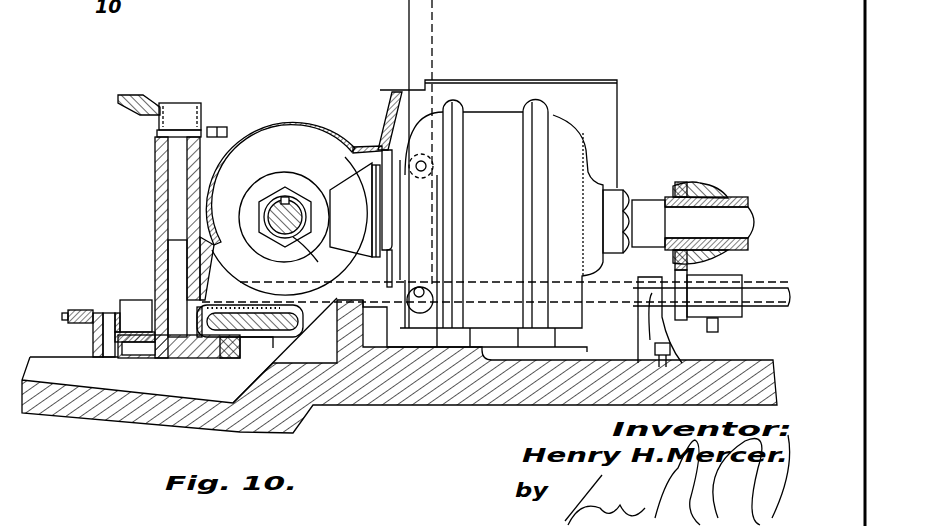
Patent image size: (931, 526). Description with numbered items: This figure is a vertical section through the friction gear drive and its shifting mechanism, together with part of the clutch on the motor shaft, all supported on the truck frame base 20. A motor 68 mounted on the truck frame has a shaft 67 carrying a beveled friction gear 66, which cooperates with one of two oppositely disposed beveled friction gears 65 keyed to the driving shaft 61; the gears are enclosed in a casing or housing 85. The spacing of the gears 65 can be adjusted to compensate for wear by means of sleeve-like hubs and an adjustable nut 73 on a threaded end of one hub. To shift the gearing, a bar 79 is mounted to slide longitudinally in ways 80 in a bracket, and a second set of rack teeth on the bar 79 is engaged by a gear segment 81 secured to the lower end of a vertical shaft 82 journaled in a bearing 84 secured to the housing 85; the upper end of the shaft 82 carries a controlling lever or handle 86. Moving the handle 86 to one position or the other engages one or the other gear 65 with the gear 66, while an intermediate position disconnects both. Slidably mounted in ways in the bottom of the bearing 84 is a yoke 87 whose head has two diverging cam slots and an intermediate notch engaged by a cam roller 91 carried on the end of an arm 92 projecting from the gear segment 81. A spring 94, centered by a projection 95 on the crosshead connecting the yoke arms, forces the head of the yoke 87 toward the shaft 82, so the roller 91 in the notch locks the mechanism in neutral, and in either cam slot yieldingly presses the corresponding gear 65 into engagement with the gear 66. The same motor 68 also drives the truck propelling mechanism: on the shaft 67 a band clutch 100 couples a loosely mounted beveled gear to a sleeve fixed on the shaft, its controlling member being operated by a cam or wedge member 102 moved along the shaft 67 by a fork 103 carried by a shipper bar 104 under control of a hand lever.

The base 20 is at (720, 390).
The driving shaft 61 is at (292, 190).
The beveled friction gear 65 is at (255, 157).
The beveled friction gear 66 is at (353, 146).
The motor shaft 67 is at (732, 220).
The motor 68 is at (568, 180).
The adjustable nut 73 is at (312, 260).
The bar 79 is at (229, 358).
The ways 80 is at (668, 10).
The gear segment 81 is at (204, 358).
The vertical shaft 82 is at (172, 172).
The bearing 84 is at (153, 253).
The casing or housing 85 is at (291, 118).
The controlling lever or handle 86 is at (148, 112).
The yoke 87 is at (82, 308).
The cam roller 91 is at (105, 310).
The arm 92 is at (135, 357).
The spring 94 is at (254, 308).
The projection 95 is at (290, 340).
The band clutch 100 is at (427, 40).
The cam or wedge member 102 is at (707, 183).
The fork 103 is at (683, 182).
The shipper bar 104 is at (770, 300).